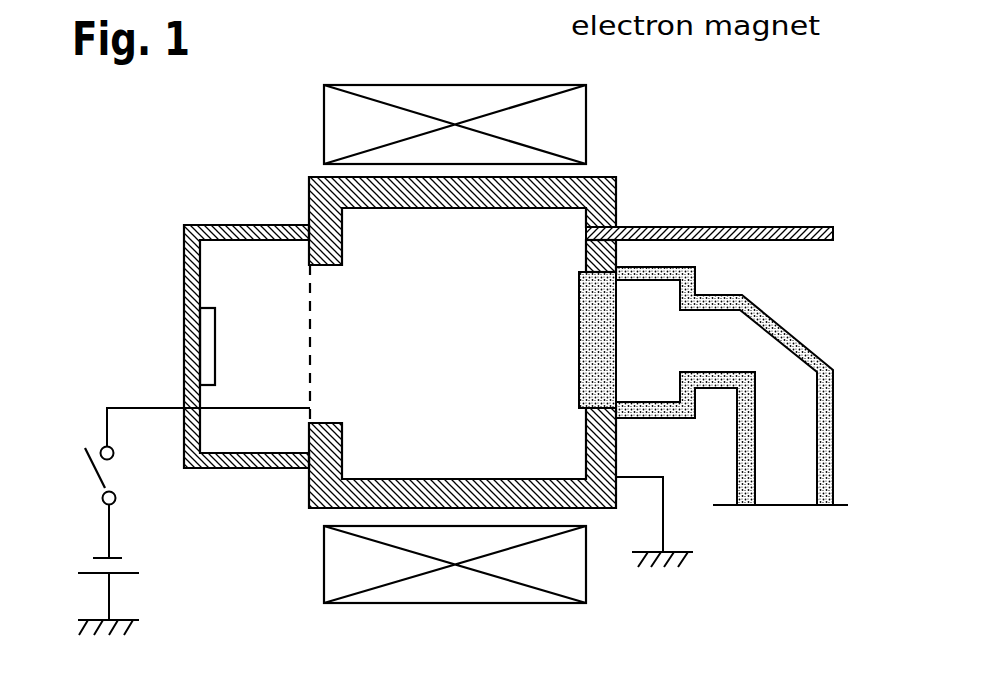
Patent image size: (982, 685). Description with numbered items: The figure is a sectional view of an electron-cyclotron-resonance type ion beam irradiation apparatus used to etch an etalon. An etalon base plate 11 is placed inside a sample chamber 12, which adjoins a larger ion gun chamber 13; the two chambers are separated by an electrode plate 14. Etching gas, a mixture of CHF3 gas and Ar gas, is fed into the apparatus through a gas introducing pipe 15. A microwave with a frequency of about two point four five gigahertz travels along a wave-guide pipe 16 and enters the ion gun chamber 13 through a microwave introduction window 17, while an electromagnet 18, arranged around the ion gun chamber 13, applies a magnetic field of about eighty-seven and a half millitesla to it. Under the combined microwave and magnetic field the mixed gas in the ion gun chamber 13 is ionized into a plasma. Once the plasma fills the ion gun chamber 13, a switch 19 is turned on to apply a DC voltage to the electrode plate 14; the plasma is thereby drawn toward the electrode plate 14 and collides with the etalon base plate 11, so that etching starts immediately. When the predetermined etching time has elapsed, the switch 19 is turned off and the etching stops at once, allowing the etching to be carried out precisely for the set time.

The etalon base plate 11 is at (205, 345).
The sample chamber 12 is at (230, 277).
The ion gun chamber 13 is at (548, 240).
The electrode plate 14 is at (310, 300).
The gas introducing pipe 15 is at (715, 223).
The wave-guide pipe 16 is at (805, 355).
The microwave introduction window 17 is at (617, 338).
The electromagnet 18 is at (402, 100).
The switch 19 is at (67, 476).